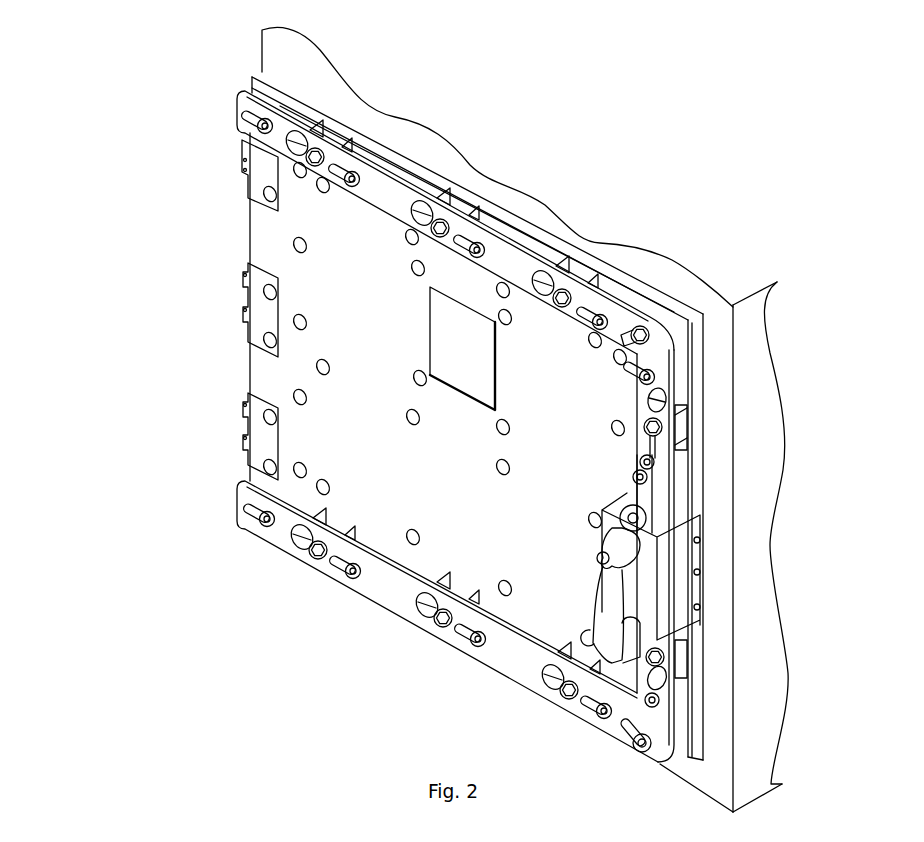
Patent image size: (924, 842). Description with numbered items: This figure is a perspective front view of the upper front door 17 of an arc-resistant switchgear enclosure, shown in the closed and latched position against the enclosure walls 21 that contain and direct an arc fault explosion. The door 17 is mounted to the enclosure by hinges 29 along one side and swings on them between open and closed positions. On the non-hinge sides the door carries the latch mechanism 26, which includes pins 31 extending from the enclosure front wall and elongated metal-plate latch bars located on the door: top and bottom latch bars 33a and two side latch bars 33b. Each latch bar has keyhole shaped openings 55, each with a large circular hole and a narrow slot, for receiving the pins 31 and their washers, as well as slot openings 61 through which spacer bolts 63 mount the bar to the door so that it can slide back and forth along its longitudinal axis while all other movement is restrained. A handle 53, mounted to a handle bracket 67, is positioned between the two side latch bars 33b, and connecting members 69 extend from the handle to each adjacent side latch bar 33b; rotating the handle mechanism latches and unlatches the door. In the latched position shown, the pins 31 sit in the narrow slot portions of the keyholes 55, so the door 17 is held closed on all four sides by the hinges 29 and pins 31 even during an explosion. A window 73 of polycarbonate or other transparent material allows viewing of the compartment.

The door 17 is at (338, 402).
The walls 21 is at (743, 330).
The latch mechanism 26 is at (835, 675).
The hinges 29 is at (260, 177).
The pins 31 is at (443, 222).
The top and bottom latch bars 33a is at (373, 187).
The side latch bars 33b is at (667, 382).
The handle 53 is at (625, 560).
The keyhole shaped openings 55 is at (418, 215).
The slot opening 61 is at (625, 333).
The spacer bolts 63 is at (474, 247).
The handle bracket 67 is at (678, 553).
The connecting members 69 is at (647, 497).
The window 73 is at (452, 335).